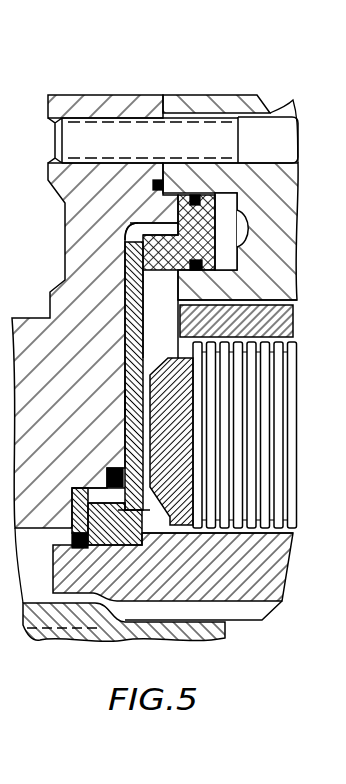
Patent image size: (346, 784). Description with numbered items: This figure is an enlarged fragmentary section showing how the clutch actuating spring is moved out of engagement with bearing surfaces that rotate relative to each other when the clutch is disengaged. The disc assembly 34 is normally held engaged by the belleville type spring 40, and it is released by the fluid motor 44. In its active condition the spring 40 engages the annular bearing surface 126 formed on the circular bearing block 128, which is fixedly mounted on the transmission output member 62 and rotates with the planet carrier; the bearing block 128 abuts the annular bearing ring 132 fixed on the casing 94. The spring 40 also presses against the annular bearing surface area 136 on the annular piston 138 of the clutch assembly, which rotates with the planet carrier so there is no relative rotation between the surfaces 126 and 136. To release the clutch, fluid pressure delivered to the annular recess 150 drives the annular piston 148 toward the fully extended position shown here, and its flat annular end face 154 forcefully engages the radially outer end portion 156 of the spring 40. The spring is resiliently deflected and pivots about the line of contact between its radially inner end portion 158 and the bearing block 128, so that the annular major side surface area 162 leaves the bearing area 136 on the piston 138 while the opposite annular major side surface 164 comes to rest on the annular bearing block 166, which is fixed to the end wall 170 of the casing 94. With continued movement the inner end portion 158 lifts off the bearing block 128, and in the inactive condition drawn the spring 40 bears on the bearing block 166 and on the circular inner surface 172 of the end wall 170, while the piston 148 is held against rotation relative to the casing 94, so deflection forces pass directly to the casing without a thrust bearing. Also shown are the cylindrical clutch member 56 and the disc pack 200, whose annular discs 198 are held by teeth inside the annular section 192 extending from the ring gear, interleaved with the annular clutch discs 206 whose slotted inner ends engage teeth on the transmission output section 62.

The disc assembly 34 is at (295, 353).
The belleville type spring 40 is at (124, 335).
The fluid motor 44 is at (212, 182).
The cylindrical clutch member 56 is at (43, 637).
The transmission output member 62 is at (228, 584).
The casing 94 is at (180, 95).
The annular bearing surface 126 is at (142, 543).
The circular bearing block 128 is at (104, 546).
The annular bearing ring 132 is at (70, 505).
The annular bearing surface area 136 is at (152, 380).
The annular piston 138 is at (183, 535).
The annular piston 148 is at (238, 195).
The annular recess 150 is at (252, 284).
The flat annular end face 154 is at (142, 230).
The radially outer end portion 156 is at (108, 243).
The radially inner end portion 158 is at (132, 508).
The annular major side surface area 162 is at (130, 305).
The annular major side surface 164 is at (118, 367).
The annular bearing block 166 is at (108, 468).
The end wall 170 is at (133, 96).
The circular inner surface 172 is at (132, 400).
The annular section 192 is at (252, 302).
The annular discs 198 is at (232, 337).
The disc pack 200 is at (277, 445).
The annular clutch discs 206 is at (283, 538).